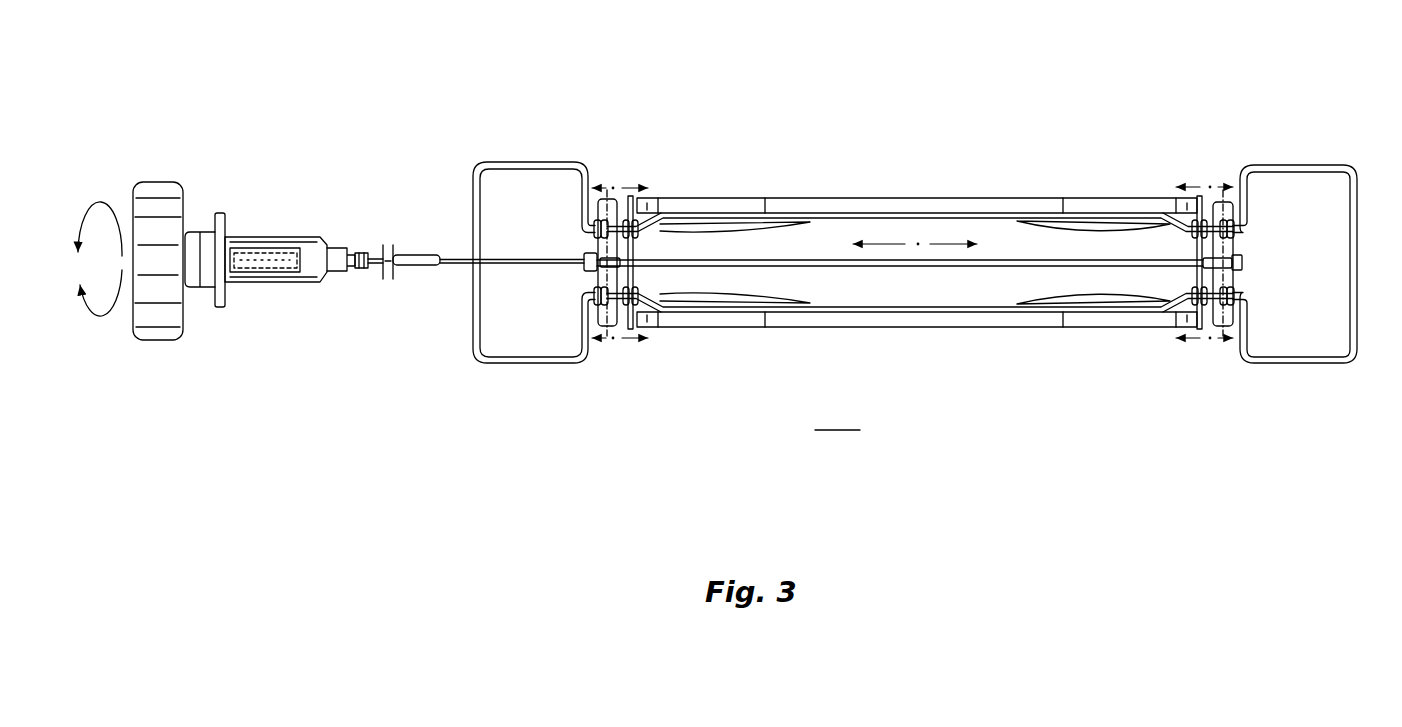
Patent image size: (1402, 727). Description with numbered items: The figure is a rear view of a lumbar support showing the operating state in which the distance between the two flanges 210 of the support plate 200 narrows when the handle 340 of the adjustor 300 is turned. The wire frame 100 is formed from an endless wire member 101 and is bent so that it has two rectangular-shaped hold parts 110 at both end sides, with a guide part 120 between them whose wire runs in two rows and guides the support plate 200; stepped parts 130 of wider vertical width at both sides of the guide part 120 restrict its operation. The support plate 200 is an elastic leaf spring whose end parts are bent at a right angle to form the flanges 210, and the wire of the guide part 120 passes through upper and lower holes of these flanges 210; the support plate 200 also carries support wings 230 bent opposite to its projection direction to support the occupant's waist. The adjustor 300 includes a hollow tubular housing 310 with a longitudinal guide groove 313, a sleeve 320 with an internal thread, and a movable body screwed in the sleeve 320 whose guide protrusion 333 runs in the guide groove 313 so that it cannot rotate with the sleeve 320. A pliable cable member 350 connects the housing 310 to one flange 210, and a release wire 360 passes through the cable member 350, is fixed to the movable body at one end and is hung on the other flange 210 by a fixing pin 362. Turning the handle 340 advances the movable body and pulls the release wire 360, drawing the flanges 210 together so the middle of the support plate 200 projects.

The wire frame 100 is at (567, 371).
The wire member 101 is at (823, 313).
The hold parts 110 is at (488, 363).
The guide part 120 is at (617, 328).
The stepped parts 130 is at (668, 297).
The support plate 200 is at (830, 232).
The flanges 210 is at (633, 198).
The support wings 230 is at (718, 203).
The adjustor 300 is at (262, 215).
The housing 310 is at (313, 277).
The longitudinal guide groove 313 is at (252, 273).
The sleeve 320 is at (201, 232).
The guide protrusion 333 is at (273, 255).
The handle 340 is at (152, 188).
The cable member 350 is at (418, 253).
The release wire 360 is at (450, 267).
The fixing pin 362 is at (1243, 262).